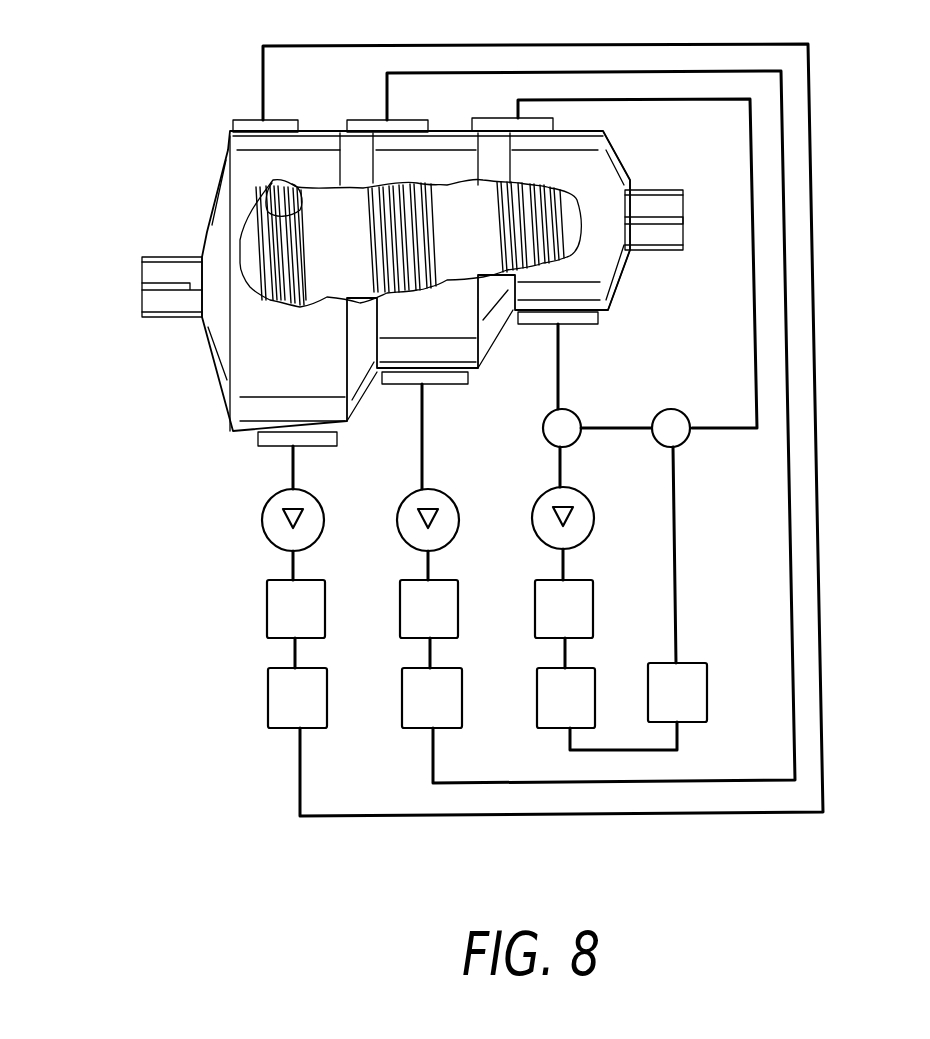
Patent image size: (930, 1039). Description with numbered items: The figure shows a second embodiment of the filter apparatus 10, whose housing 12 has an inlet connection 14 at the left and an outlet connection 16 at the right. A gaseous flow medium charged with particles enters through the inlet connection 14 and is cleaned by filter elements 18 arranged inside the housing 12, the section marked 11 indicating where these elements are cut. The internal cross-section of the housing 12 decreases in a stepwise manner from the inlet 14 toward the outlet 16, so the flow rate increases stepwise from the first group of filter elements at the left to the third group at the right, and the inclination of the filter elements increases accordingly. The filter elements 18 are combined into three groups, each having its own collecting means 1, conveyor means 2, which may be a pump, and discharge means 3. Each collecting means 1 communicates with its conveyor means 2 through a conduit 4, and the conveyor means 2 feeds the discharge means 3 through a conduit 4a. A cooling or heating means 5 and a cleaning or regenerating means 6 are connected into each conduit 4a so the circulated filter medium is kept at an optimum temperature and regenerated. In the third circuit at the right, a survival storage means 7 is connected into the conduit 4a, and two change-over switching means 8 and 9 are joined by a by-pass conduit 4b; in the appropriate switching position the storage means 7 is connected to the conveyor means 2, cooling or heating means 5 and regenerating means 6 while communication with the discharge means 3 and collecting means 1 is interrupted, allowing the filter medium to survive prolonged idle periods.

The collecting means 1 is at (282, 447).
The conveyor means 2 is at (277, 527).
The discharge means 3 is at (283, 120).
The conduit 4 is at (300, 470).
The conduit 4a is at (605, 752).
The by-pass conduit 4b is at (617, 430).
The cooling or heating means 5 is at (285, 608).
The cleaning or regenerating means 6 is at (290, 700).
The survival storage means 7 is at (704, 692).
The change-over switching means 8 is at (675, 420).
The change-over switching means 9 is at (567, 420).
The filter apparatus 10 is at (198, 414).
The rotor section 11 is at (268, 192).
The housing 12 is at (637, 186).
The inlet connection 14 is at (172, 318).
The outlet connection 16 is at (657, 250).
The filter elements 18 is at (283, 280).